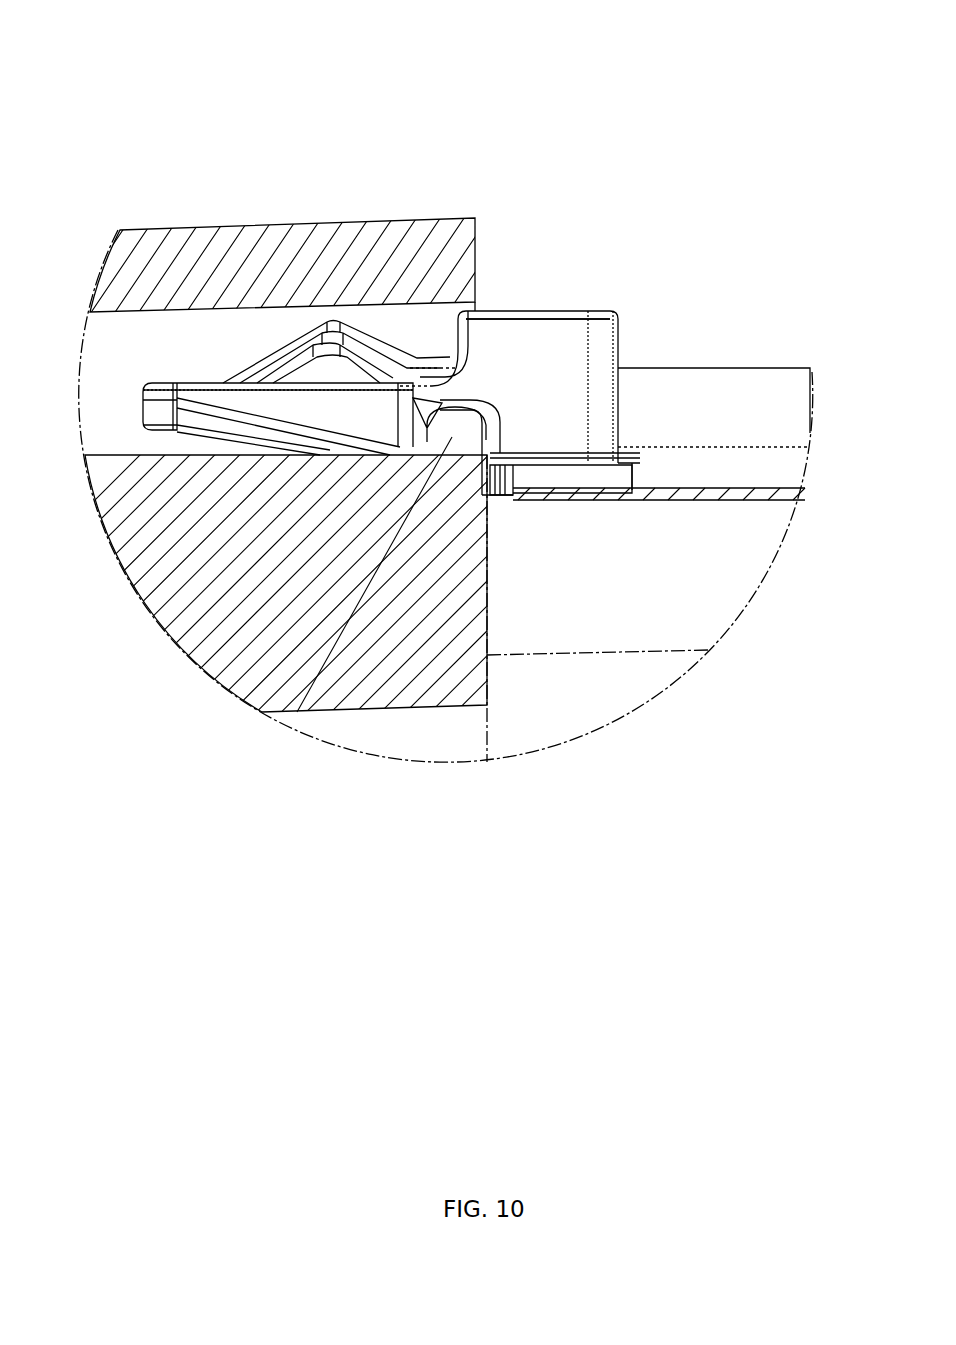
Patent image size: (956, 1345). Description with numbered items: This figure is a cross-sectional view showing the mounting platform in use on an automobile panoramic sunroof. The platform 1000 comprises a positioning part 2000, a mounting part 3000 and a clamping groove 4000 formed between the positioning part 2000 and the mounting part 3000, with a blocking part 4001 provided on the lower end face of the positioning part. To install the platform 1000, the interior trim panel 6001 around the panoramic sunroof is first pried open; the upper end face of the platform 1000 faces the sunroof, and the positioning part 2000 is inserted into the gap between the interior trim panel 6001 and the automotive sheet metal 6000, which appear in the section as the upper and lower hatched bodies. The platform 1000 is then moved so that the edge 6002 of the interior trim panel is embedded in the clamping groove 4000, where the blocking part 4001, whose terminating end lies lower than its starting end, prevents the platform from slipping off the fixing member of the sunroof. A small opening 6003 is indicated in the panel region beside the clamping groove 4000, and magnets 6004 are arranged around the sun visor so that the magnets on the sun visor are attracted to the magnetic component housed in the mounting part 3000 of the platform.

The platform 1000 is at (628, 285).
The positioning part 2000 is at (314, 400).
The mounting part 3000 is at (542, 397).
The clamping groove 4000 is at (442, 417).
The blocking part 4001 is at (387, 432).
The automotive sheet metal 6000 is at (286, 263).
The interior trim panel 6001 is at (255, 597).
The edge of the interior trim panel 6002 is at (458, 435).
The panel opening 6003 is at (567, 600).
The magnets 6004 is at (585, 475).